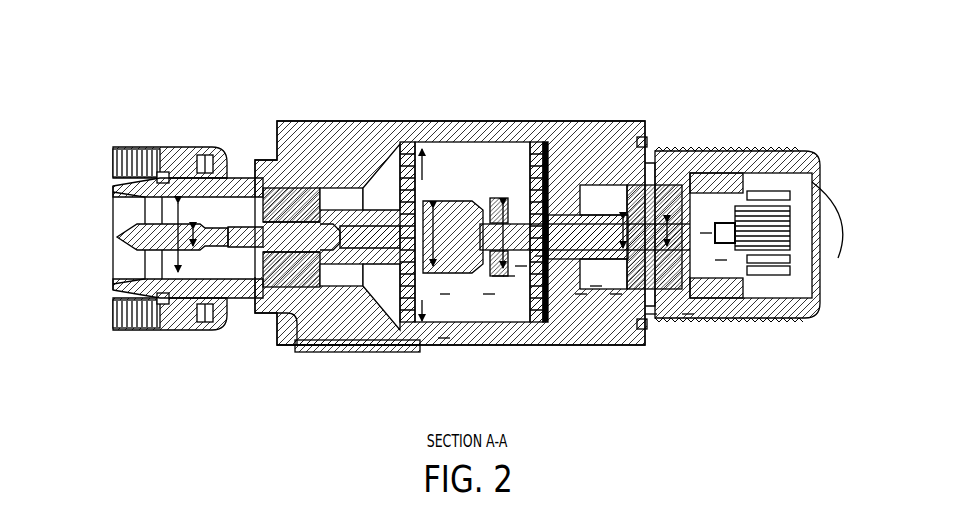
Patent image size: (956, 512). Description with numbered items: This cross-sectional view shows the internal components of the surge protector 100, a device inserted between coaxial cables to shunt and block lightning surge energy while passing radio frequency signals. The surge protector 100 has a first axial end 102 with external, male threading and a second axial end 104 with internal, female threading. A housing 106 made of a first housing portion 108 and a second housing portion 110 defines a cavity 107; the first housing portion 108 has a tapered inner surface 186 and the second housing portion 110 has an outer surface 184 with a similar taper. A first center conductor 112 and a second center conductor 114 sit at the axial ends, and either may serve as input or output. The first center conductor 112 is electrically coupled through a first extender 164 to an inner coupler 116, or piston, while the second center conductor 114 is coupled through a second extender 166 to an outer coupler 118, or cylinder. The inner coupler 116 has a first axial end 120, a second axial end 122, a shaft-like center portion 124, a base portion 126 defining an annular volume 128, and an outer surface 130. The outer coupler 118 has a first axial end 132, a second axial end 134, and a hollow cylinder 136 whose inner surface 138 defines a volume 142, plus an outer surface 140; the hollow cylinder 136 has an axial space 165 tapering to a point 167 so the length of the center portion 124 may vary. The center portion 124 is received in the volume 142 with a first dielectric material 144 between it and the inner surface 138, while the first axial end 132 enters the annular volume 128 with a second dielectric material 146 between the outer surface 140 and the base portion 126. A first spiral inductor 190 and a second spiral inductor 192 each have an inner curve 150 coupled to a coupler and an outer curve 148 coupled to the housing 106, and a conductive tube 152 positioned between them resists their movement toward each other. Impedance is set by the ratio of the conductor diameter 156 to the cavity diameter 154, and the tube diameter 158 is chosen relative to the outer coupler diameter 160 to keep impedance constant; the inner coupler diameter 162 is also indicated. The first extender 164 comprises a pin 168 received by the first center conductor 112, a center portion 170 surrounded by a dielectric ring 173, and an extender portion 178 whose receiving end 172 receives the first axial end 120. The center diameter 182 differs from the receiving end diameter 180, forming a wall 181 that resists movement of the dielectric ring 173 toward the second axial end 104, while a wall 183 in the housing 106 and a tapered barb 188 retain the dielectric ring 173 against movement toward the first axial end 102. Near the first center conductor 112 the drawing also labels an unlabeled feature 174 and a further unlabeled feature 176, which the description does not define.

The surge protector 100 is at (163, 87).
The first axial end 102 is at (834, 231).
The second axial end 104 is at (113, 208).
The housing 106 is at (426, 135).
The cavity 107 is at (224, 205).
The first housing portion 108 is at (307, 352).
The second housing portion 110 is at (278, 352).
The first center conductor 112 is at (720, 224).
The second center conductor 114 is at (130, 237).
The inner coupler 116 is at (525, 258).
The outer coupler 118 is at (478, 203).
The first axial end 120 is at (648, 160).
The second axial end 122 is at (400, 200).
The center portion 124 is at (508, 213).
The base portion 126 is at (510, 258).
The annular volume 128 is at (560, 220).
The outer surface 130 is at (545, 200).
The first axial end 132 is at (580, 298).
The second axial end 134 is at (383, 330).
The hollow cylinder 136 is at (498, 278).
The inner surface 138 is at (508, 278).
The outer surface 140 is at (488, 298).
The volume 142 is at (475, 288).
The first dielectric material 144 is at (505, 203).
The second dielectric material 146 is at (540, 258).
The outer curve 148 is at (405, 180).
The inner curve 150 is at (360, 188).
The tube 152 is at (488, 213).
The cavity diameter 154 is at (160, 250).
The conductor diameter 156 is at (196, 260).
The tube diameter 158 is at (440, 298).
The outer coupler diameter 160 is at (443, 340).
The inner coupler diameter 162 is at (520, 268).
The first extender 164 is at (687, 320).
The axial space 165 is at (322, 188).
The second extender 166 is at (285, 245).
The point 167 is at (300, 185).
The pin 168 is at (720, 263).
The center portion 170 is at (663, 320).
The receiving end 172 is at (615, 298).
The dielectric ring 173 is at (680, 190).
The insert 174 is at (748, 213).
The passage 176 is at (705, 236).
The extender portion 178 is at (637, 346).
The receiving end diameter 180 is at (650, 320).
The wall 181 is at (668, 160).
The center diameter 182 is at (728, 220).
The wall 183 is at (683, 173).
The outer surface 184 is at (288, 352).
The inner surface 186 is at (332, 342).
The barb 188 is at (690, 200).
The first spiral inductor 190 is at (595, 288).
The second spiral inductor 192 is at (372, 200).